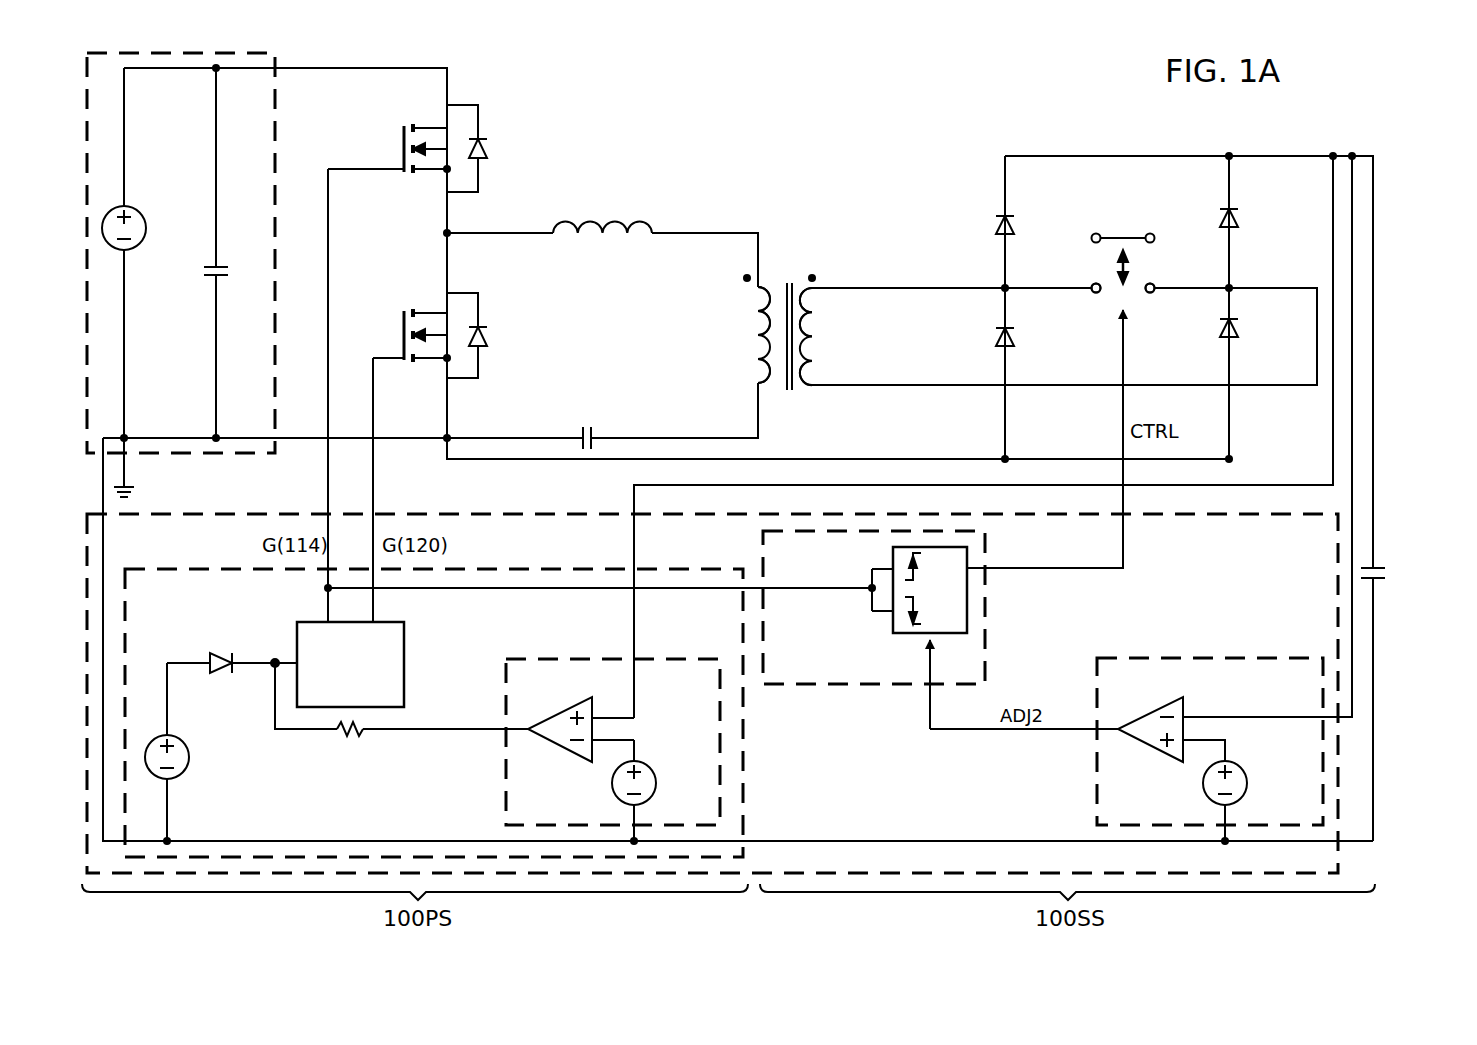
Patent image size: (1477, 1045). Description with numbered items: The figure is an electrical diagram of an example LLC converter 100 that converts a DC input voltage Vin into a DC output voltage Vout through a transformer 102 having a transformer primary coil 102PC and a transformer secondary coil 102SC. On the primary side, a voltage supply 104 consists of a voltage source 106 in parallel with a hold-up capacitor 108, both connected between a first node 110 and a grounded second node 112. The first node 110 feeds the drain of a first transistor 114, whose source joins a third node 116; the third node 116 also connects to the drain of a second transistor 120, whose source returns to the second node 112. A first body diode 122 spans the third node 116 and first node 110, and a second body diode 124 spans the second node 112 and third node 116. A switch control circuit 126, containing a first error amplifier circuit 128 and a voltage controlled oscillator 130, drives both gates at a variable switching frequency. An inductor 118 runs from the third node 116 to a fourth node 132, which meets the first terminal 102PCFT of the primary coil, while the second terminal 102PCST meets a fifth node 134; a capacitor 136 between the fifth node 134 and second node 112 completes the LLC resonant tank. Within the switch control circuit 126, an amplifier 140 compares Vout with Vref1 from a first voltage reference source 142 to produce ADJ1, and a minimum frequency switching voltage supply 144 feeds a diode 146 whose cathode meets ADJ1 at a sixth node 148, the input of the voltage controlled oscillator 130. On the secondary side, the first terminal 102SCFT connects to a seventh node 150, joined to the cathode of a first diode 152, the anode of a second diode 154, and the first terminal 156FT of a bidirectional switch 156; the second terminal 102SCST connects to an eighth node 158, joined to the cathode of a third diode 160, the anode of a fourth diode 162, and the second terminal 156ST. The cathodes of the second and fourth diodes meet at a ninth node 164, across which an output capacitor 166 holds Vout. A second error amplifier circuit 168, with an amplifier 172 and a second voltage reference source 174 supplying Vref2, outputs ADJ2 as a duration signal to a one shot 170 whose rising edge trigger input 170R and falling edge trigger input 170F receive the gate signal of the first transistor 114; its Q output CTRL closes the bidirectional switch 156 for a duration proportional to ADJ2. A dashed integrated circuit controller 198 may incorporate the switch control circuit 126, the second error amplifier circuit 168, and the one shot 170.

The LLC converter 100 is at (945, 100).
The transformer 102 is at (798, 268).
The transformer primary coil 102PC is at (766, 325).
The first terminal of the transformer primary coil 102PCFT is at (760, 297).
The second terminal of the transformer primary coil 102PCST is at (760, 372).
The transformer secondary coil 102SC is at (818, 325).
The first terminal of the transformer secondary coil 102SCFT is at (822, 297).
The second terminal of the transformer secondary coil 102SCST is at (822, 375).
The voltage supply 104 is at (280, 112).
The voltage source 106 is at (140, 210).
The capacitor 108 is at (204, 272).
The first node 110 is at (428, 68).
The second node 112 is at (168, 436).
The first transistor 114 is at (398, 140).
The third node 116 is at (443, 230).
The inductor 118 is at (612, 208).
The second transistor 120 is at (398, 328).
The first body diode 122 is at (489, 150).
The second body diode 124 is at (489, 338).
The switch control circuit 126 is at (750, 748).
The first error amplifier circuit 128 is at (584, 655).
The voltage controlled oscillator 130 is at (405, 668).
The fourth node 132 is at (698, 232).
The fifth node 134 is at (698, 437).
The capacitor 136 is at (585, 425).
The amplifier 140 is at (560, 710).
The first voltage reference source 142 is at (612, 783).
The minimum frequency switching voltage supply 144 is at (183, 776).
The diode 146 is at (222, 675).
The sixth node 148 is at (272, 660).
The seventh node 150 is at (878, 287).
The first diode 152 is at (1015, 338).
The second diode 154 is at (995, 225).
The bidirectional switch 156 is at (1132, 230).
The first terminal of the bidirectional switch 156FT is at (1093, 295).
The second terminal of the bidirectional switch 156ST is at (1156, 295).
The eighth node 158 is at (878, 386).
The third diode 160 is at (1240, 332).
The fourth diode 162 is at (1240, 222).
The ninth node 164 is at (1286, 155).
The output capacitor 166 is at (1387, 573).
The second error amplifier circuit 168 is at (1092, 770).
The one shot 170 is at (992, 608).
The rising edge trigger input 170R is at (870, 568).
The falling edge trigger input 170F is at (870, 608).
The amplifier 172 is at (1150, 705).
The second voltage reference source 174 is at (1203, 783).
The integrated circuit controller 198 is at (428, 510).